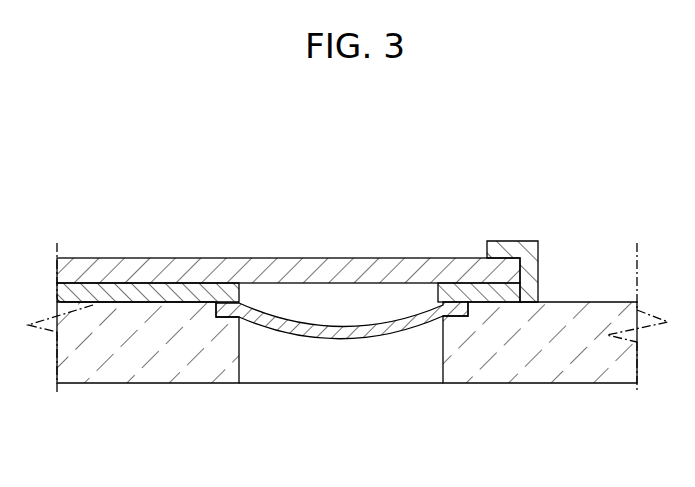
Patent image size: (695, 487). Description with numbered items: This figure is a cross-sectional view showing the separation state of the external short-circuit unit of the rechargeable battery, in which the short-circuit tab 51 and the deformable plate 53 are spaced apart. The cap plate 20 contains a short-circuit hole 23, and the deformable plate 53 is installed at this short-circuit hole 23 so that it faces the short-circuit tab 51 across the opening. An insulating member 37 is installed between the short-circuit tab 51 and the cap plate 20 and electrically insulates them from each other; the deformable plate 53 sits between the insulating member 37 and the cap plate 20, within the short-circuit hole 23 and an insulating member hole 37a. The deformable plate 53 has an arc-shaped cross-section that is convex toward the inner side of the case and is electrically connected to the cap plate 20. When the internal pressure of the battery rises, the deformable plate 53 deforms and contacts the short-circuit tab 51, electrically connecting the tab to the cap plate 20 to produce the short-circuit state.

The cap plate 20 is at (538, 358).
The short-circuit hole 23 is at (284, 365).
The insulating member 37 is at (508, 250).
The insulating member hole 37a is at (437, 293).
The short-circuit tab 51 is at (273, 265).
The deformable plate 53 is at (373, 327).